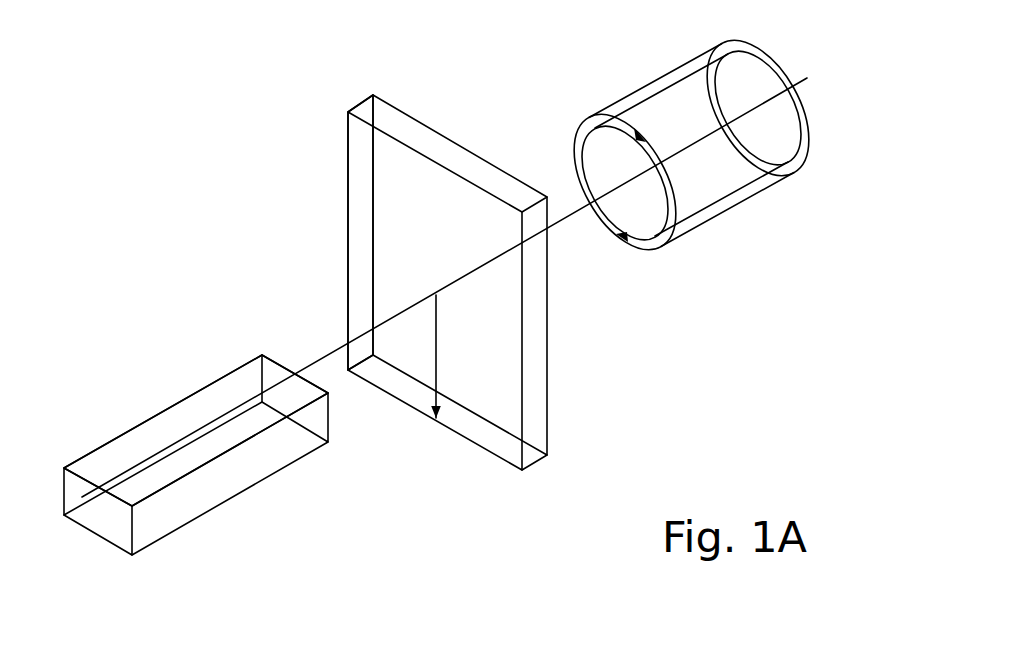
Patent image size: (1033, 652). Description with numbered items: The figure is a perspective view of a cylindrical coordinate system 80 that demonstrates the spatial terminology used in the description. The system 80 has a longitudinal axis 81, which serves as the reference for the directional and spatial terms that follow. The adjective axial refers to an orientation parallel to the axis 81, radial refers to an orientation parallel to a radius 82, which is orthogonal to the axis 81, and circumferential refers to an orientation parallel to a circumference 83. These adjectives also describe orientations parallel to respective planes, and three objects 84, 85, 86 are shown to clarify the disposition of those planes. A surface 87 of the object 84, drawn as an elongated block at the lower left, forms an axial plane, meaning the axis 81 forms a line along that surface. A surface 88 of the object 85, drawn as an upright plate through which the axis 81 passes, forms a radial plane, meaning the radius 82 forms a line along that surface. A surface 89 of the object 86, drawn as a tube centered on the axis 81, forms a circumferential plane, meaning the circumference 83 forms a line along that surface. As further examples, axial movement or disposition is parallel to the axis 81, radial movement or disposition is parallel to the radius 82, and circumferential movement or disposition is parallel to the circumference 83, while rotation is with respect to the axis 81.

The cylindrical coordinate system 80 is at (307, 158).
The longitudinal axis 81 is at (805, 76).
The radius 82 is at (436, 348).
The circumference 83 is at (575, 145).
The object 84 is at (160, 540).
The object 85 is at (552, 459).
The object 86 is at (722, 214).
The surface 87 is at (153, 435).
The surface 88 is at (364, 237).
The surface 89 is at (657, 78).